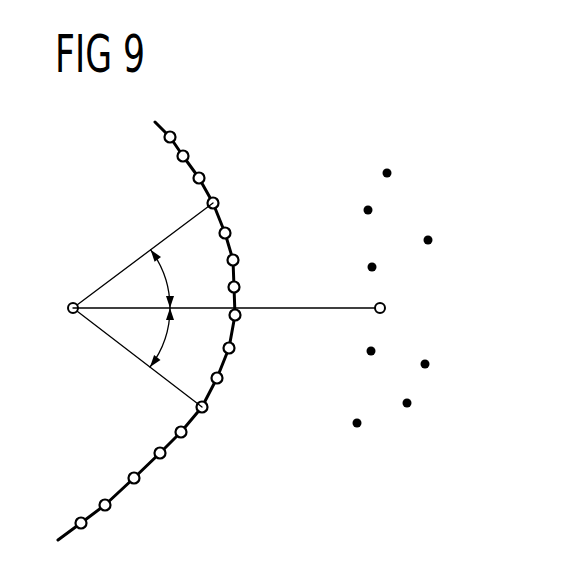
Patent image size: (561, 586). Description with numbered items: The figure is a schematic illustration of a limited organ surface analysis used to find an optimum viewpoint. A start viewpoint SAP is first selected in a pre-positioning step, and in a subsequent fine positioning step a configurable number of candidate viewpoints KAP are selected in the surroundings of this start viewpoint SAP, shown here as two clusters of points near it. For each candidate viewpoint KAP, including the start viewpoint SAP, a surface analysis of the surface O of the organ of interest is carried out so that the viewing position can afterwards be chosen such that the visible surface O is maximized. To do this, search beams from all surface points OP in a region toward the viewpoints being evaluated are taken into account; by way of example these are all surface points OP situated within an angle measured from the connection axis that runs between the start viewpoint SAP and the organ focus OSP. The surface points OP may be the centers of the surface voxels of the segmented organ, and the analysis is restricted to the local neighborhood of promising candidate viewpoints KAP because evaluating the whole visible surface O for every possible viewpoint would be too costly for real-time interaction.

The surface of the organ O is at (120, 492).
The surface points OP is at (174, 133).
The organ focus OSP is at (73, 302).
The start viewpoint SAP is at (386, 306).
The candidate viewpoints KAP is at (374, 264).